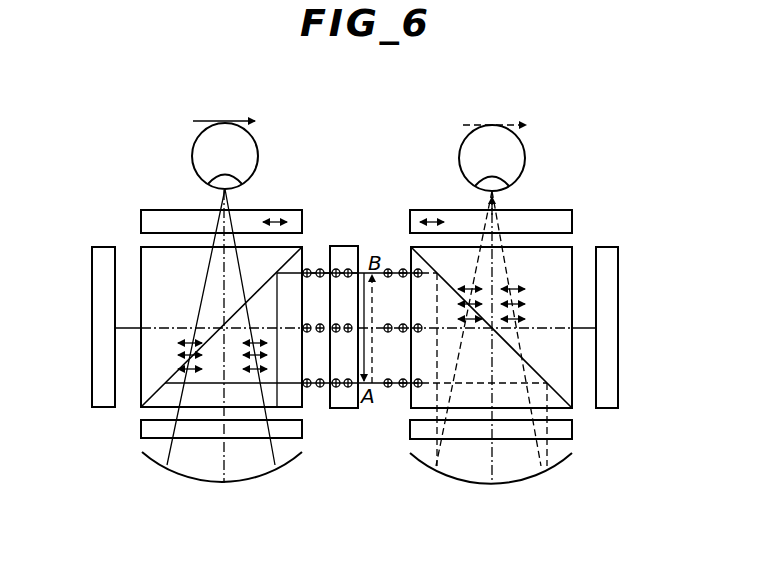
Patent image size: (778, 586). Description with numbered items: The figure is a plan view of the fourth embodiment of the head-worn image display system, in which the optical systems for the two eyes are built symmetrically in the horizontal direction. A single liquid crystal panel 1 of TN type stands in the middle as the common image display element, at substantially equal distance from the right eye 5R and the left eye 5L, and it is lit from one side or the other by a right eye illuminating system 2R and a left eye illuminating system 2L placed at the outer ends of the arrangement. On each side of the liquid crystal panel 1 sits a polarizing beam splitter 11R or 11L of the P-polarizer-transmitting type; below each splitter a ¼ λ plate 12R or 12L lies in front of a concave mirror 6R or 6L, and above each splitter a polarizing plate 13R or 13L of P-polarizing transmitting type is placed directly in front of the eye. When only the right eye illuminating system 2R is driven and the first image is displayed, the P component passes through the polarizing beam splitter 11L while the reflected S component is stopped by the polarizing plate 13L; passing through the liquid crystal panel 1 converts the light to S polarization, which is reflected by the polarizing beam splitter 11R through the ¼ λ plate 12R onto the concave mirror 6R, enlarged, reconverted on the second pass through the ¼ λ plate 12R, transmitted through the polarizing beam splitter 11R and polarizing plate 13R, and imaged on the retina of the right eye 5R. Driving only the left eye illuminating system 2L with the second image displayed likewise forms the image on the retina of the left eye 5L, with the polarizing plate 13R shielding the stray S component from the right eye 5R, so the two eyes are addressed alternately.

The liquid crystal panel 1 is at (343, 410).
The left eye illuminating system 2L is at (98, 409).
The right eye illuminating system 2R is at (612, 409).
The right eye 5R is at (193, 157).
The left eye 5L is at (525, 158).
The concave mirror 6R is at (242, 481).
The concave mirror 6L is at (519, 482).
The polarizing beam splitter 11R is at (141, 247).
The polarizing beam splitter 11L is at (572, 247).
The ¼ λ plate 12R is at (141, 428).
The ¼ λ plate 12L is at (572, 430).
The polarizing plate 13R is at (178, 209).
The polarizing plate 13L is at (563, 210).